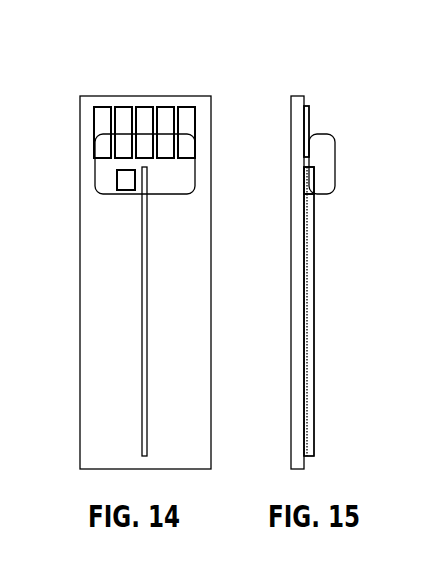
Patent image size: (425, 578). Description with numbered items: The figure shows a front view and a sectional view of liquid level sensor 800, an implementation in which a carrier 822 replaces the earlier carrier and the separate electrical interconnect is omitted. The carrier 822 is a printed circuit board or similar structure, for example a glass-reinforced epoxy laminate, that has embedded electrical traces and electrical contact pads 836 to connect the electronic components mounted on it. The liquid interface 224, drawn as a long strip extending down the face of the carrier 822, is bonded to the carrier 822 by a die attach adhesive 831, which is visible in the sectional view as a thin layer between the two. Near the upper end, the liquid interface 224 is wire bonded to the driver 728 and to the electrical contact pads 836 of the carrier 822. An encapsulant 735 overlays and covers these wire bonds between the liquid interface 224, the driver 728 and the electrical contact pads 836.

In FIG. 14, the sensor 800 is at (117, 50).
In FIG. 15, the sensor 800 is at (362, 86).
In FIG. 14, the carrier 822 is at (190, 96).
In FIG. 15, the carrier 822 is at (299, 106).
In FIG. 14, the electrical contact pads 836 is at (145, 113).
In FIG. 14, the driver 728 is at (114, 184).
In FIG. 14, the liquid interface 224 is at (142, 335).
In FIG. 15, the liquid interface 224 is at (318, 362).
In FIG. 15, the encapsulant 735 is at (320, 176).
In FIG. 15, the die attach adhesive 831 is at (308, 275).